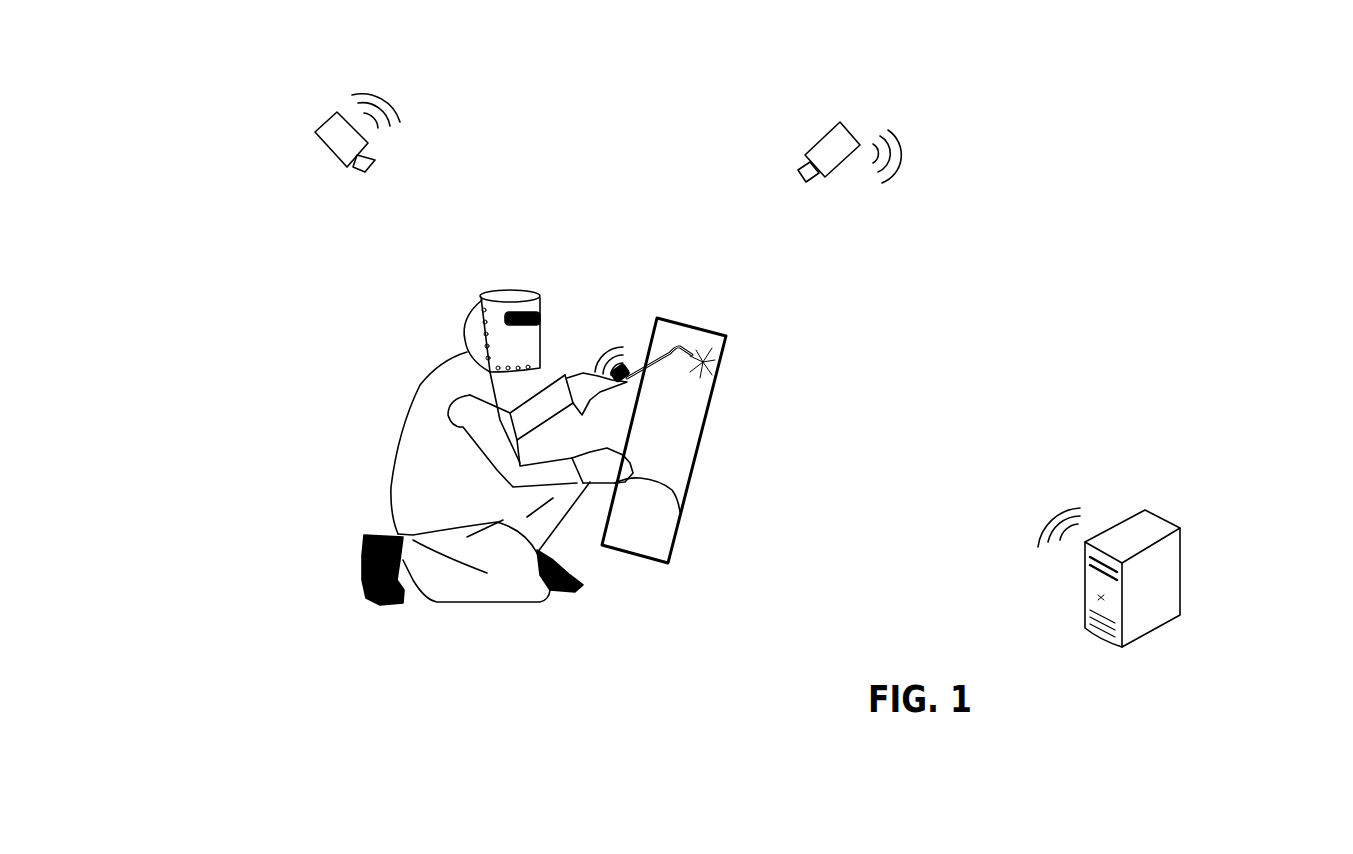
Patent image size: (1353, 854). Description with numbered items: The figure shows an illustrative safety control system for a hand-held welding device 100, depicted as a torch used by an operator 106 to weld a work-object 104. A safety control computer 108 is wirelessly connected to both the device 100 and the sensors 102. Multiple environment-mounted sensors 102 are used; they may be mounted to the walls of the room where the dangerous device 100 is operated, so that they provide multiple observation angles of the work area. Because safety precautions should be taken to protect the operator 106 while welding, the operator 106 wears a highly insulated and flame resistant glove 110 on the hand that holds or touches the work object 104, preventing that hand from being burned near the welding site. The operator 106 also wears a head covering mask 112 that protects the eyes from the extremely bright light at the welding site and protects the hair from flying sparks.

The hand-held welding device 100 is at (642, 358).
The environment-mounted sensors 102 is at (337, 112).
The work-object 104 is at (713, 402).
The operator 106 is at (430, 378).
The safety control computer 108 is at (1223, 470).
The glove 110 is at (680, 512).
The mask 112 is at (480, 292).